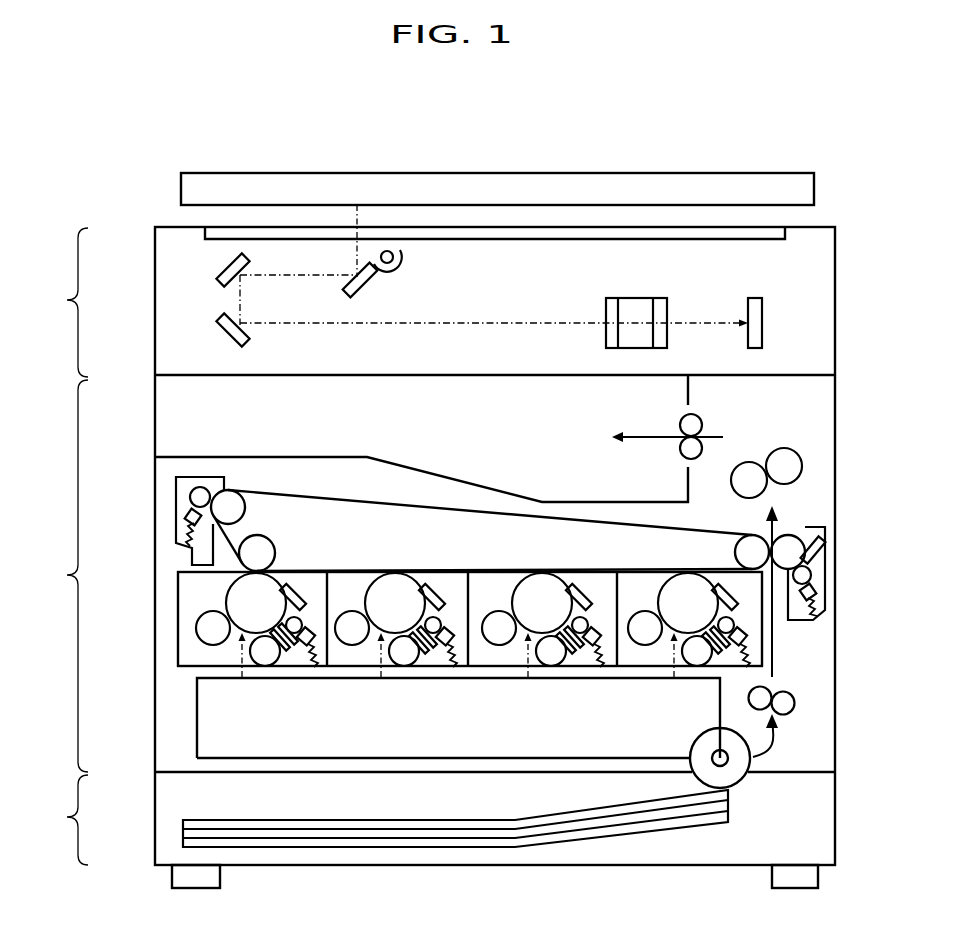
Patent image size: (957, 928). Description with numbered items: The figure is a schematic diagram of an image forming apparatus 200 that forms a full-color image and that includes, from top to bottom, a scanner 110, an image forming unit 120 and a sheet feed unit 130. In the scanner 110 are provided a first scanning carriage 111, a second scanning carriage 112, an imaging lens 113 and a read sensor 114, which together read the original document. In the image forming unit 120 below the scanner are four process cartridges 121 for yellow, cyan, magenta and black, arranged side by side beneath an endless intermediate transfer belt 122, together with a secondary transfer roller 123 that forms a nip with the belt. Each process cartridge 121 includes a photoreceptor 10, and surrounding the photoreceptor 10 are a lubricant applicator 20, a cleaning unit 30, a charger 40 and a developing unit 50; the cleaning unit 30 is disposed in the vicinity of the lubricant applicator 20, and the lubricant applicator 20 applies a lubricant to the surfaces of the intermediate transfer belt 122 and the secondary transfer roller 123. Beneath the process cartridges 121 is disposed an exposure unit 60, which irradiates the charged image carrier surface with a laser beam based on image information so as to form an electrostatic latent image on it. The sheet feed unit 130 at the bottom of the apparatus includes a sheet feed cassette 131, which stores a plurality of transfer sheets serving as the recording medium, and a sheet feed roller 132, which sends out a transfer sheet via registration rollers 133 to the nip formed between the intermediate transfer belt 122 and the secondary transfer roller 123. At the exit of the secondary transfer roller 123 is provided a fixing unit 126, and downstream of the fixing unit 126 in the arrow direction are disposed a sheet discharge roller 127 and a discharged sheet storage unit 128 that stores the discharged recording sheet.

The image forming apparatus 200 is at (556, 138).
The scanner 110 is at (58, 302).
The first scanning carriage 111 is at (374, 291).
The second scanning carriage 112 is at (252, 345).
The imaging lens 113 is at (638, 298).
The read sensor 114 is at (757, 298).
The image forming unit 120 is at (58, 576).
The discharged sheet storage unit 128 is at (175, 420).
The sheet discharge roller 127 is at (682, 420).
The fixing unit 126 is at (782, 448).
The intermediate transfer belt 122 is at (427, 507).
The secondary transfer roller 123 is at (790, 533).
The process cartridge 121 is at (292, 686).
The photoreceptor 10 is at (270, 588).
The lubricant applicator 20 is at (310, 636).
The cleaning unit 30 is at (297, 593).
The charger 40 is at (262, 681).
The developing unit 50 is at (195, 627).
The exposure unit 60 is at (492, 760).
The sheet feed unit 130 is at (58, 820).
The sheet feed cassette 131 is at (347, 842).
The sheet feed roller 132 is at (743, 780).
The registration rollers 133 is at (790, 692).